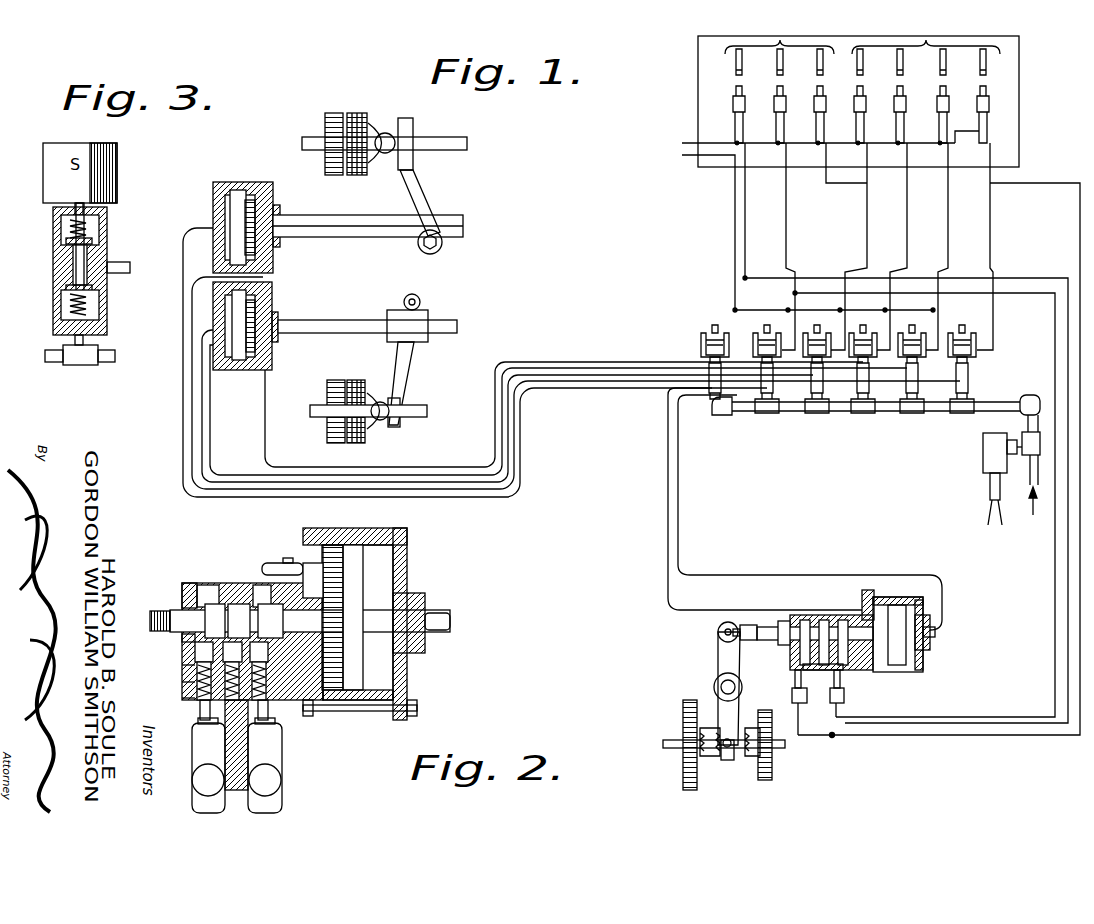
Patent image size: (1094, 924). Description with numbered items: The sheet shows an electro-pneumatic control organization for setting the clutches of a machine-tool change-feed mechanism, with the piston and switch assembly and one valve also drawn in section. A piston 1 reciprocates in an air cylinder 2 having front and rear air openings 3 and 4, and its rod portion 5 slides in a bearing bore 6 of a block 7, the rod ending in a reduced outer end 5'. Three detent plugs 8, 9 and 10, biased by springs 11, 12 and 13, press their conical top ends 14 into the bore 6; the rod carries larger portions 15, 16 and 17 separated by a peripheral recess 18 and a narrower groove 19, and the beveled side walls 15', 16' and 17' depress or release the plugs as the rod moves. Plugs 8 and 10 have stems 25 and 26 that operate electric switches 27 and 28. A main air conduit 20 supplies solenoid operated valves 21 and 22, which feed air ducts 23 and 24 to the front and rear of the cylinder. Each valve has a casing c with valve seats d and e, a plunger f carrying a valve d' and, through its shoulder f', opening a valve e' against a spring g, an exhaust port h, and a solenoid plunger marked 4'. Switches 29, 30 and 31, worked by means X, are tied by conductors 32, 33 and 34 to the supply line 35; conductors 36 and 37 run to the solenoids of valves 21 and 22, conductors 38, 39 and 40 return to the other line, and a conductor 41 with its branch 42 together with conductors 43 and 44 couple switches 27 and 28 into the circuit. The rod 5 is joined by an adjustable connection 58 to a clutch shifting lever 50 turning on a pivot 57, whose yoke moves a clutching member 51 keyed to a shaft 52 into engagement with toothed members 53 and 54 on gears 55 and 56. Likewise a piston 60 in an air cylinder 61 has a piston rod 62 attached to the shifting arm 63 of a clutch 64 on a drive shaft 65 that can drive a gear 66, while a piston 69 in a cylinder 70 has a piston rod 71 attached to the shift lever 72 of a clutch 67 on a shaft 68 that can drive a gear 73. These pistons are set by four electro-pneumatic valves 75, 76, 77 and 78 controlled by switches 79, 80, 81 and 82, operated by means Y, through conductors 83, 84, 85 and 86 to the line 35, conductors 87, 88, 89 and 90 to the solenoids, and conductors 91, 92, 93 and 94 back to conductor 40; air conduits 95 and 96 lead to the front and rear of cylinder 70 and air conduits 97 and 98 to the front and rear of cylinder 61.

In FIG. 1, the piston 1 is at (900, 665).
In FIG. 2, the piston 1 is at (362, 560).
In FIG. 1, the air cylinder 2 is at (915, 597).
In FIG. 2, the air cylinder 2 is at (348, 528).
In FIG. 2, the front air opening 3 is at (315, 577).
In FIG. 1, the rear air opening 4 is at (933, 635).
In FIG. 2, the rear air opening 4 is at (421, 624).
In FIG. 1, the rod portion 5 is at (815, 644).
In FIG. 2, the rod portion 5 is at (289, 631).
In FIG. 2, the reduced outer end of rod 5' is at (148, 620).
In FIG. 2, the bearing bore 6 is at (182, 605).
In FIG. 1, the block 7 is at (873, 670).
In FIG. 2, the block 7 is at (312, 676).
In FIG. 1, the detent plug 8 is at (784, 622).
In FIG. 2, the detent plug 8 is at (204, 671).
In FIG. 1, the detent plug 9 is at (823, 620).
In FIG. 2, the detent plug 9 is at (232, 671).
In FIG. 1, the detent plug 10 is at (842, 620).
In FIG. 2, the detent plug 10 is at (259, 671).
In FIG. 2, the spring 11 is at (182, 668).
In FIG. 2, the spring 12 is at (182, 684).
In FIG. 2, the spring 13 is at (182, 699).
In FIG. 2, the conical top end 14 is at (182, 638).
In FIG. 1, the rod portion 15 is at (880, 598).
In FIG. 2, the rod portion 15 is at (341, 617).
In FIG. 2, the side wall of portion 15 15' is at (288, 540).
In FIG. 1, the rod portion 16 is at (823, 676).
In FIG. 2, the rod portion 16 is at (254, 569).
In FIG. 2, the side wall of portion 16 16' is at (287, 621).
In FIG. 1, the rod portion 17 is at (797, 624).
In FIG. 2, the rod portion 17 is at (207, 573).
In FIG. 2, the side wall of portion 17 17' is at (200, 621).
In FIG. 2, the peripheral recess 18 is at (275, 563).
In FIG. 2, the peripheral groove 19 is at (230, 604).
In FIG. 3, the main air conduit 20 is at (98, 363).
In FIG. 1, the main air conduit 20 is at (990, 412).
In FIG. 1, the solenoid operated valve 21 is at (722, 398).
In FIG. 1, the solenoid operated valve 22 is at (772, 398).
In FIG. 1, the air duct 23 is at (668, 473).
In FIG. 1, the air duct 24 is at (681, 468).
In FIG. 2, the stem of plug 8 25 is at (200, 706).
In FIG. 2, the stem of plug 10 26 is at (268, 706).
In FIG. 1, the electric switch 27 is at (792, 693).
In FIG. 2, the electric switch 27 is at (192, 755).
In FIG. 1, the electric switch 28 is at (844, 697).
In FIG. 2, the electric switch 28 is at (282, 758).
In FIG. 1, the switch 29 is at (733, 104).
In FIG. 1, the switch 30 is at (774, 104).
In FIG. 1, the switch 31 is at (814, 104).
In FIG. 1, the conductor 32 is at (734, 131).
In FIG. 1, the conductor 33 is at (775, 131).
In FIG. 1, the conductor 34 is at (815, 131).
In FIG. 1, the current supply line 35 is at (688, 142).
In FIG. 1, the conductor 36 is at (747, 232).
In FIG. 1, the conductor 37 is at (788, 238).
In FIG. 1, the conductor 38 is at (781, 325).
In FIG. 1, the conductor 39 is at (833, 300).
In FIG. 1, the conductor 40 is at (735, 251).
In FIG. 1, the conductor 41 is at (827, 185).
In FIG. 1, the branch conductor 42 is at (832, 716).
In FIG. 1, the conductor 43 is at (1068, 566).
In FIG. 1, the conductor 44 is at (1055, 548).
In FIG. 1, the clutch shifting lever 50 is at (718, 660).
In FIG. 1, the clutching member 51 is at (727, 760).
In FIG. 1, the shaft 52 is at (786, 750).
In FIG. 1, the toothed member 53 is at (708, 758).
In FIG. 1, the toothed member 54 is at (750, 758).
In FIG. 1, the gear 55 is at (683, 783).
In FIG. 1, the gear 56 is at (772, 773).
In FIG. 1, the pivot 57 is at (714, 686).
In FIG. 1, the adjustable connection 58 is at (750, 624).
In FIG. 1, the piston 60 is at (252, 195).
In FIG. 1, the air cylinder 61 is at (240, 192).
In FIG. 1, the piston rod 62 is at (355, 215).
In FIG. 1, the shifting arm 63 is at (427, 182).
In FIG. 1, the clutch 64 is at (358, 113).
In FIG. 1, the drive shaft 65 is at (425, 137).
In FIG. 1, the gear 66 is at (332, 113).
In FIG. 1, the clutch 67 is at (352, 380).
In FIG. 1, the shaft 68 is at (427, 409).
In FIG. 1, the piston 69 is at (236, 362).
In FIG. 1, the cylinder 70 is at (248, 366).
In FIG. 1, the piston rod 71 is at (352, 320).
In FIG. 1, the shift lever 72 is at (410, 366).
In FIG. 1, the gear 73 is at (327, 387).
In FIG. 1, the electro-pneumatic valve 75 is at (822, 398).
In FIG. 1, the electro-pneumatic valve 76 is at (868, 398).
In FIG. 1, the electro-pneumatic valve 77 is at (917, 398).
In FIG. 1, the electro-pneumatic valve 78 is at (969, 392).
In FIG. 1, the electric switch 79 is at (866, 104).
In FIG. 1, the electric switch 80 is at (906, 104).
In FIG. 1, the electric switch 81 is at (949, 104).
In FIG. 1, the electric switch 82 is at (989, 104).
In FIG. 1, the conductor 83 is at (855, 131).
In FIG. 1, the conductor 84 is at (895, 131).
In FIG. 1, the conductor 85 is at (937, 131).
In FIG. 1, the conductor 86 is at (976, 131).
In FIG. 1, the conductor 87 is at (868, 207).
In FIG. 1, the conductor 88 is at (908, 207).
In FIG. 1, the conductor 89 is at (949, 207).
In FIG. 1, the conductor 90 is at (992, 207).
In FIG. 1, the conductor 91 is at (831, 323).
In FIG. 1, the conductor 92 is at (878, 323).
In FIG. 1, the conductor 93 is at (926, 323).
In FIG. 1, the conductor 94 is at (976, 323).
In FIG. 1, the air conduit 95 is at (265, 447).
In FIG. 1, the air conduit 96 is at (225, 466).
In FIG. 1, the air conduit 97 is at (205, 277).
In FIG. 1, the air duct 98 is at (196, 227).
In FIG. 1, the automatic mechanism X is at (779, 36).
In FIG. 1, the automatic switch operating means Y is at (926, 36).
In FIG. 3, the stem 4' is at (74, 196).
In FIG. 3, the exhaust port h is at (53, 228).
In FIG. 3, the valve d' is at (99, 228).
In FIG. 3, the valve seat d is at (100, 239).
In FIG. 3, the plunger f is at (54, 265).
In FIG. 3, the shoulder f' is at (54, 248).
In FIG. 3, the casing c is at (110, 274).
In FIG. 3, the valve e' is at (58, 295).
In FIG. 3, the valve seat e is at (97, 305).
In FIG. 3, the spring g is at (86, 312).